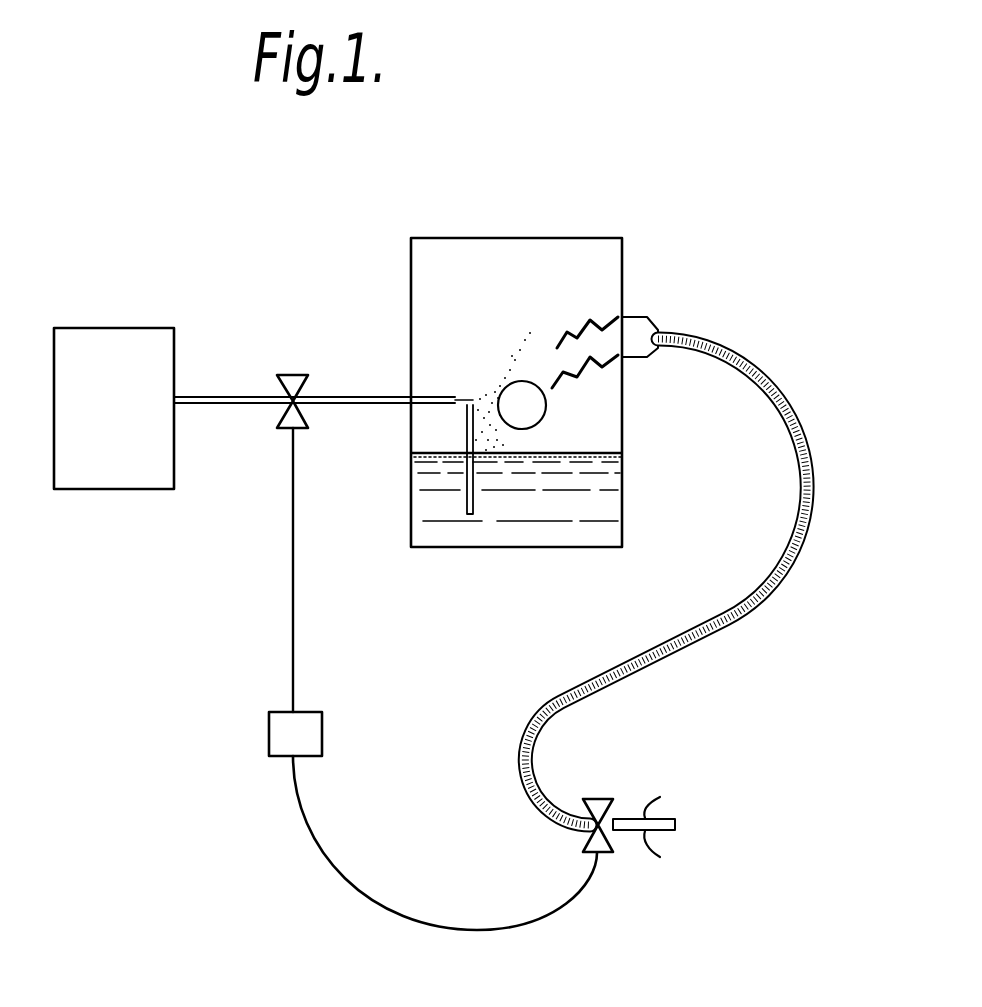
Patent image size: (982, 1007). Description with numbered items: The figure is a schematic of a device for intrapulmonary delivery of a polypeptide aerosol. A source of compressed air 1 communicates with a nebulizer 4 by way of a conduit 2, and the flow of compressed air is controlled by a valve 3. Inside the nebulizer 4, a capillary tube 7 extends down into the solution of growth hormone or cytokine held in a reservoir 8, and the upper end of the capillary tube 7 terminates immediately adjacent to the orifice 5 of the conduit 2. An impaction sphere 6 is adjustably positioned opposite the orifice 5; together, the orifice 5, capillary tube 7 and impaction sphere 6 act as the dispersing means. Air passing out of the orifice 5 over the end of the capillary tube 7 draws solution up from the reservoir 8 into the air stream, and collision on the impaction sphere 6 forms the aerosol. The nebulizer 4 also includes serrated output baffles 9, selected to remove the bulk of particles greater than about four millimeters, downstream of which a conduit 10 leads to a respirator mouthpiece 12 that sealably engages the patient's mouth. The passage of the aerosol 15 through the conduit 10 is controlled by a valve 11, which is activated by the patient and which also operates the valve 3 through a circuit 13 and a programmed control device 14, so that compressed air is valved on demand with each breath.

The source of compressed air 1 is at (97, 342).
The conduit 2 is at (222, 397).
The valve 3 is at (295, 375).
The nebulizer 4 is at (552, 238).
The orifice 5 is at (472, 383).
The impaction sphere 6 is at (533, 413).
The capillary tube 7 is at (463, 427).
The reservoir 8 is at (543, 510).
The serrated output baffles 9 is at (583, 375).
The conduit 10 is at (696, 571).
The valve 11 is at (593, 795).
The respirator mouthpiece 12 is at (646, 796).
The circuit 13 is at (347, 860).
The control device 14 is at (315, 740).
The aerosol 15 is at (803, 548).